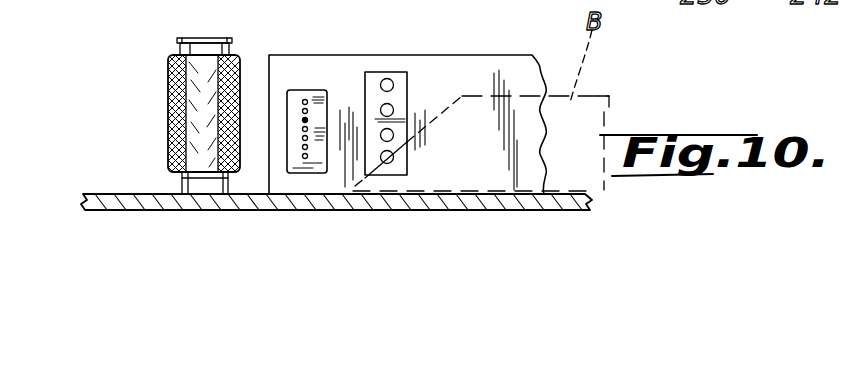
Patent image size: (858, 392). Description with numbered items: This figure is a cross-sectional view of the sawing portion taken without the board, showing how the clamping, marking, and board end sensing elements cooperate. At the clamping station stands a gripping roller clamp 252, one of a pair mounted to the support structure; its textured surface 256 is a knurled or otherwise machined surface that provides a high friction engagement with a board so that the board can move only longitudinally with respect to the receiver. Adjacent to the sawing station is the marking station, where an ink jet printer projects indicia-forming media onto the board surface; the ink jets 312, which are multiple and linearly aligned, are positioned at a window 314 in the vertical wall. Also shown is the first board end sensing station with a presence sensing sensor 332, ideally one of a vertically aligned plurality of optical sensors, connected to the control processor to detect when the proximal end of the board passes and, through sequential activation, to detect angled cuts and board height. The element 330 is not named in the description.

The gripping roller clamp 252 is at (197, 36).
The textured surface 256 is at (241, 65).
The window 314 is at (285, 110).
The ink jets 312 is at (307, 111).
The terminal board 330 is at (392, 108).
The presence sensing sensor 332 is at (394, 109).